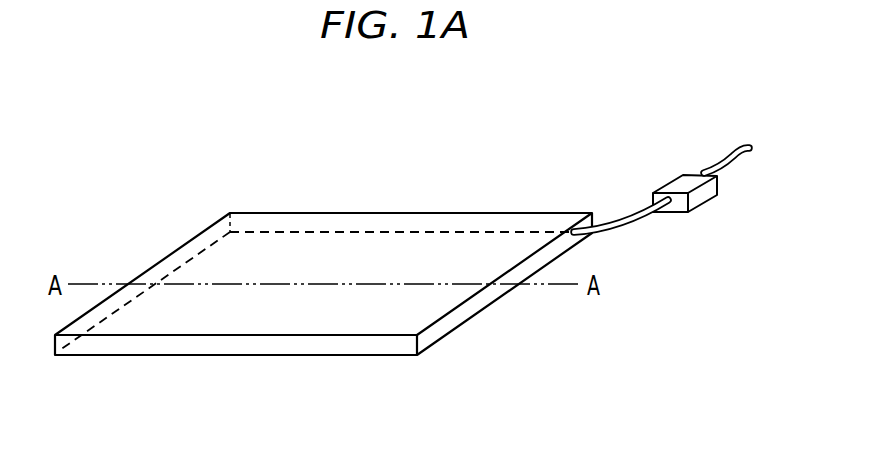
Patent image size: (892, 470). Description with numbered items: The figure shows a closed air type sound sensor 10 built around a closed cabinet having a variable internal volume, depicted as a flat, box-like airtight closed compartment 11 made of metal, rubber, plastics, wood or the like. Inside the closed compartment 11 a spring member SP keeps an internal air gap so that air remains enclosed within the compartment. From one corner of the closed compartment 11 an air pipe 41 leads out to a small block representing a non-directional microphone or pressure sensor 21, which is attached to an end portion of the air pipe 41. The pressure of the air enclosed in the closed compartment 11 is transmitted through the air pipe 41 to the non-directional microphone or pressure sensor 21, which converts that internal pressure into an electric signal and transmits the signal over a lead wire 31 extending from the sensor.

The sensor panel assembly 10 is at (183, 184).
The closed compartment 11 is at (520, 213).
The spring member SP is at (347, 241).
The non-directional microphone or pressure sensor 21 is at (676, 178).
The lead wire 31 is at (728, 154).
The air pipe 41 is at (640, 220).